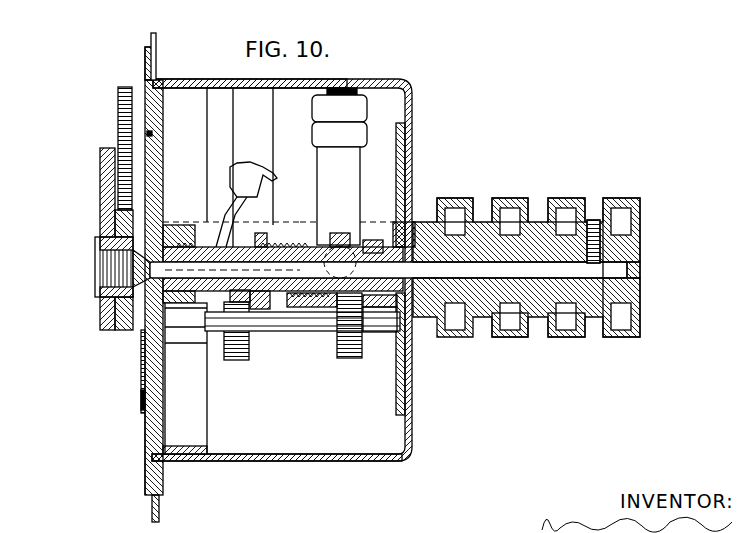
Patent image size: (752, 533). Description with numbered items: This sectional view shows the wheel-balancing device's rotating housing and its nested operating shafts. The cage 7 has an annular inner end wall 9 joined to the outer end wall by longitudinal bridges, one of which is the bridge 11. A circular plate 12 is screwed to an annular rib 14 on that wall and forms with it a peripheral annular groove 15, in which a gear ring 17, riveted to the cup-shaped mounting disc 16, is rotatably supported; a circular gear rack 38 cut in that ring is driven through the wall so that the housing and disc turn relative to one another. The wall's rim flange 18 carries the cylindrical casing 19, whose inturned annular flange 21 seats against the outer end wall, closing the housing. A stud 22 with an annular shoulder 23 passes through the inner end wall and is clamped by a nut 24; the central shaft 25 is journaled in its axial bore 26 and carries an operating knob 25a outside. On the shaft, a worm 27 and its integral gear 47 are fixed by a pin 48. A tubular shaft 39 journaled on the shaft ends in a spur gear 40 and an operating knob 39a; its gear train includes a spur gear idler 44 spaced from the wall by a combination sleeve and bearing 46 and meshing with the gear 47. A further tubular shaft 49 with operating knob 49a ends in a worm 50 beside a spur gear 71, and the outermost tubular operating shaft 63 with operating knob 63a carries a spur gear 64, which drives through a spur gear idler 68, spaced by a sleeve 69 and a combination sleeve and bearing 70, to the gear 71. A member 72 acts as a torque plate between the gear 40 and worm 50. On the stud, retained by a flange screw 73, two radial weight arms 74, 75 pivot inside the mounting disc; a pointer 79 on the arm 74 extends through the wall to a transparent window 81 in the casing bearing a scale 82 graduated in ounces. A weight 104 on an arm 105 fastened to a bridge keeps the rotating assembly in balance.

The cage 7 is at (412, 93).
The annular inner end wall 9 is at (165, 167).
The longitudinal bridge 11 is at (300, 232).
The circular plate 12 is at (140, 395).
The annular rib 14 is at (140, 350).
The peripheral annular groove 15 is at (150, 134).
The cup-shaped mounting disc 16 is at (159, 42).
The gear ring 17 is at (145, 58).
The rim flange 18 is at (189, 78).
The cylindrical casing 19 is at (288, 463).
The inturned annular flange 21 is at (412, 398).
The stud 22 is at (100, 247).
The annular shoulder 23 is at (140, 247).
The nut 24 is at (172, 242).
The shaft 25 is at (627, 268).
The operating knob 25a is at (622, 197).
The axial bore 26 is at (100, 302).
The worm 27 is at (181, 343).
The circular gear rack 38 is at (145, 422).
The tubular shaft 39 is at (552, 285).
The operating knob 39a is at (562, 197).
The spur gear 40 is at (262, 233).
The spur gear idler 44 is at (236, 362).
The combination sleeve and bearing 46 is at (220, 348).
The gear 47 is at (240, 237).
The pin 48 is at (262, 235).
The tubular shaft 49 is at (488, 292).
The operating knob 49a is at (507, 197).
The worm 50 is at (312, 300).
The tubular operating shaft 63 is at (413, 237).
The operating knob 63a is at (458, 197).
The spur gear 64 is at (364, 240).
The spur gear idler 68 is at (346, 358).
The sleeve 69 is at (272, 333).
The combination sleeve and bearing 70 is at (376, 333).
The spur gear 71 is at (345, 233).
The member 72 is at (296, 308).
The flange screw 73 is at (95, 273).
The weight arm 74 is at (119, 105).
The weight arm 75 is at (100, 175).
The pointer 79 is at (248, 167).
The transparent window 81 is at (323, 83).
The scale 82 is at (272, 112).
The weight 104 is at (353, 98).
The arm 105 is at (360, 167).